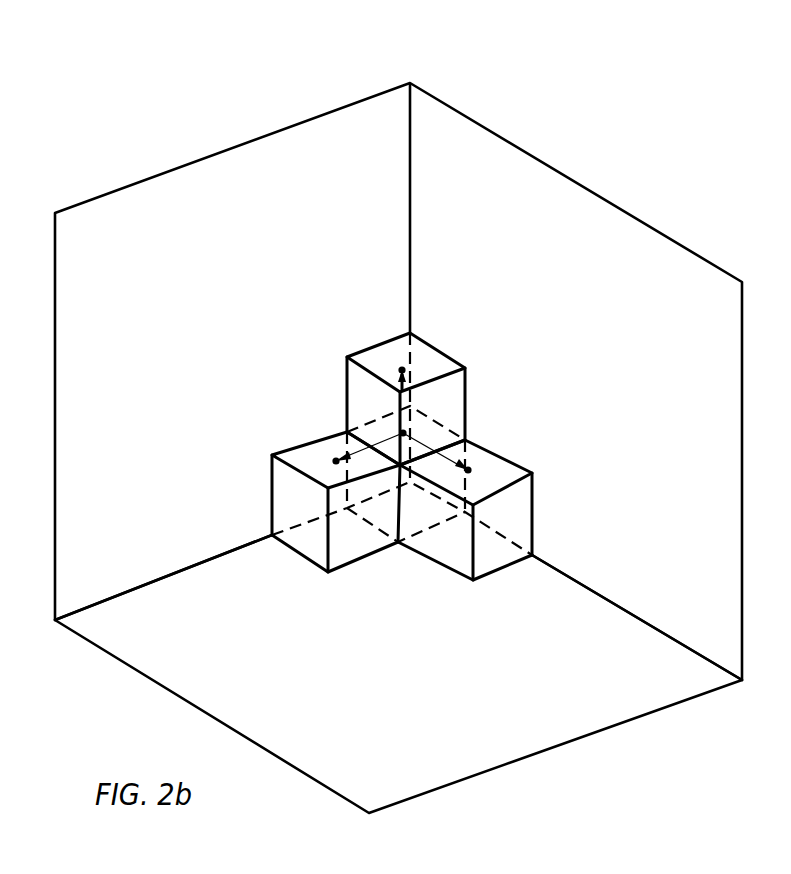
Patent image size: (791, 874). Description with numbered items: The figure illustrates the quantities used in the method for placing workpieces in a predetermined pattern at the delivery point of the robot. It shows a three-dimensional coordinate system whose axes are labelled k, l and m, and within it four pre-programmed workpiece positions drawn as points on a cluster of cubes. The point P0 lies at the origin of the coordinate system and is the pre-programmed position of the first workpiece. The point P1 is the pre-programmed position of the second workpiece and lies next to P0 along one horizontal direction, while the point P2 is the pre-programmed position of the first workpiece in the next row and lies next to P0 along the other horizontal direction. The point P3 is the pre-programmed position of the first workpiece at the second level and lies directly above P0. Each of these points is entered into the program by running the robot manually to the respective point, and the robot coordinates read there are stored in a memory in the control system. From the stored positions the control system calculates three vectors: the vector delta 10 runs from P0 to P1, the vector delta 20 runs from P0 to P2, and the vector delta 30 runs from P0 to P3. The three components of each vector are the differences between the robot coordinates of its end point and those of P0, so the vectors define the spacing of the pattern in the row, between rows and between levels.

The point P0 is at (407, 430).
The point P1 is at (336, 461).
The point P2 is at (468, 470).
The point P3 is at (401, 365).
The vector delta 10 is at (347, 455).
The vector delta 20 is at (452, 456).
The vector delta 30 is at (405, 388).
The k coordinate axis k is at (55, 620).
The l coordinate axis l is at (742, 680).
The m coordinate axis m is at (410, 83).